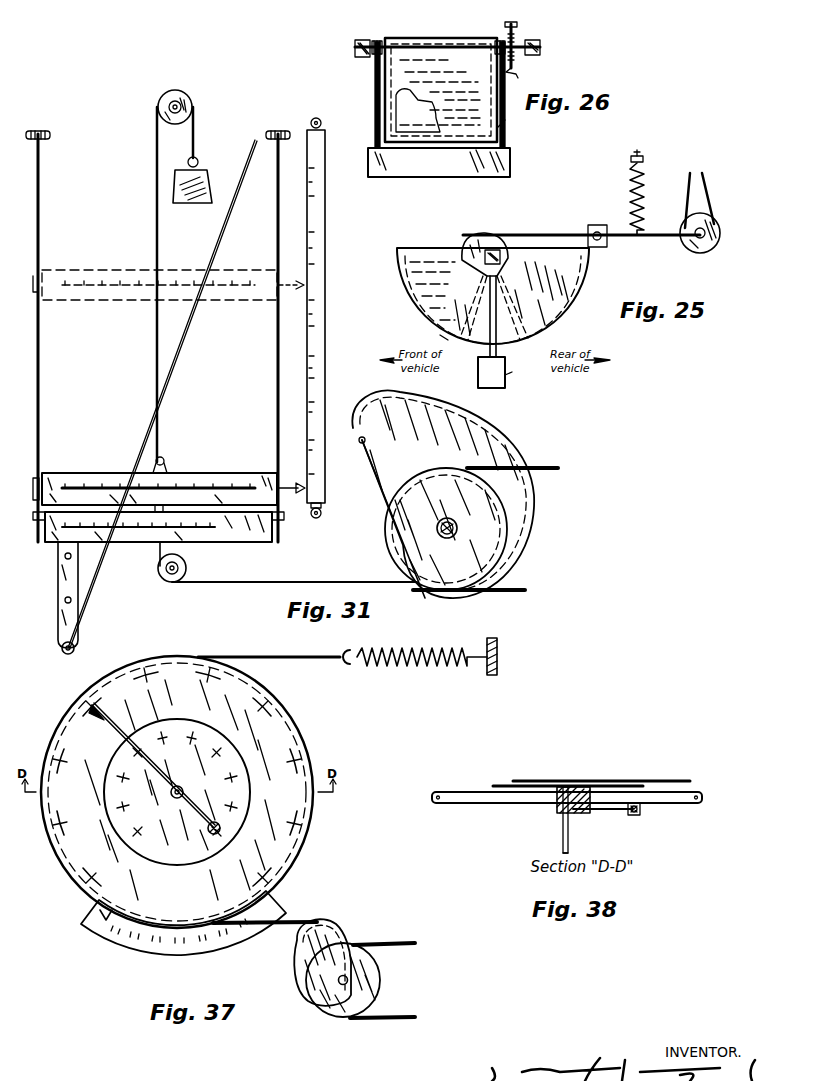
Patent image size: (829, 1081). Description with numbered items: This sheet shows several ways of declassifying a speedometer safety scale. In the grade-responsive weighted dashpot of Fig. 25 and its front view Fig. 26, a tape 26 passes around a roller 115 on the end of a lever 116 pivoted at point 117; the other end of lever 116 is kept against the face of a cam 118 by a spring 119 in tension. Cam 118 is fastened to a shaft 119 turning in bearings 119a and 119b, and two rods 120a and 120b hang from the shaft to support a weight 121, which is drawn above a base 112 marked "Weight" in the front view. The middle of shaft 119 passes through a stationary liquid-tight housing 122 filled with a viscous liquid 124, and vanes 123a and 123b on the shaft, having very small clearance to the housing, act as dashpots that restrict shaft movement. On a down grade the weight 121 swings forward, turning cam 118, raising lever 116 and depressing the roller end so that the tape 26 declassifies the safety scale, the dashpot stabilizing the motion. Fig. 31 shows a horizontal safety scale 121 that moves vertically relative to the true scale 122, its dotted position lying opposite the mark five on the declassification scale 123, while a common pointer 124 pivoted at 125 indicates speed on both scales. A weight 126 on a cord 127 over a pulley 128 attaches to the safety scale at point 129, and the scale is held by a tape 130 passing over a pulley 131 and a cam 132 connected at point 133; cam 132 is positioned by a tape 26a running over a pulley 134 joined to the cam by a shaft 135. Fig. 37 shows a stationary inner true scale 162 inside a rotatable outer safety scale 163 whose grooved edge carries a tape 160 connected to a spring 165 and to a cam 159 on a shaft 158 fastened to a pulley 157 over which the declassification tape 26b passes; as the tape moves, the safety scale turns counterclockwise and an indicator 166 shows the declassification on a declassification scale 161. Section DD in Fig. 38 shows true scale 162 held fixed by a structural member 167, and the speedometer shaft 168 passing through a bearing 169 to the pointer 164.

In FIG. 26, the weight base 112 is at (512, 156).
In FIG. 25, the roller 115 is at (717, 220).
In FIG. 26, the lever 116 is at (515, 25).
In FIG. 25, the lever 116 is at (655, 240).
In FIG. 25, the pivot point 117 is at (598, 248).
In FIG. 26, the cam 118 is at (518, 75).
In FIG. 25, the cam 118 is at (462, 240).
In FIG. 26, the shaft 119 is at (532, 54).
In FIG. 25, the shaft 119 is at (630, 190).
In FIG. 26, the bearing 119a is at (541, 46).
In FIG. 25, the bearing 119a is at (502, 254).
In FIG. 26, the bearing 119b is at (360, 60).
In FIG. 26, the rod 120a is at (512, 126).
In FIG. 25, the rod 120a is at (505, 360).
In FIG. 26, the rod 120b is at (375, 95).
In FIG. 25, the weight 121 is at (506, 376).
In FIG. 31, the weight 121 is at (82, 300).
In FIG. 26, the housing 122 is at (420, 38).
In FIG. 25, the housing 122 is at (575, 318).
In FIG. 31, the housing 122 is at (244, 542).
In FIG. 31, the declassification scale 123 is at (326, 305).
In FIG. 25, the vane 123a is at (540, 340).
In FIG. 25, the vane 123b is at (466, 345).
In FIG. 31, the viscous liquid 124 is at (80, 572).
In FIG. 31, the pivot 125 is at (74, 645).
In FIG. 31, the weight 126 is at (185, 204).
In FIG. 31, the cord 127 is at (196, 136).
In FIG. 31, the pulley 128 is at (192, 100).
In FIG. 31, the connection point 129 is at (166, 462).
In FIG. 31, the tape 130 is at (158, 550).
In FIG. 31, the pulley 131 is at (188, 566).
In FIG. 31, the cam 132 is at (500, 422).
In FIG. 31, the connection point 133 is at (362, 446).
In FIG. 31, the pulley 134 is at (385, 540).
In FIG. 31, the shaft 135 is at (458, 528).
In FIG. 25, the tape 26 is at (712, 190).
In FIG. 31, the tape 26a is at (556, 466).
In FIG. 37, the declassification tape 26b is at (388, 942).
In FIG. 37, the pulley 157 is at (380, 970).
In FIG. 37, the shaft 158 is at (338, 983).
In FIG. 37, the cam 159 is at (332, 926).
In FIG. 37, the tape 160 is at (290, 916).
In FIG. 37, the declassification scale 161 is at (104, 926).
In FIG. 37, the inner scale 162 is at (252, 778).
In FIG. 38, the inner scale 162 is at (505, 784).
In FIG. 37, the outer scale 163 is at (305, 730).
In FIG. 38, the outer scale 163 is at (445, 792).
In FIG. 37, the pointer 164 is at (92, 712).
In FIG. 38, the pointer 164 is at (572, 780).
In FIG. 31, the spring 165 is at (409, 672).
In FIG. 37, the indicator 166 is at (106, 915).
In FIG. 38, the structural member 167 is at (575, 814).
In FIG. 38, the speedometer shaft 168 is at (562, 830).
In FIG. 38, the bearing 169 is at (555, 806).